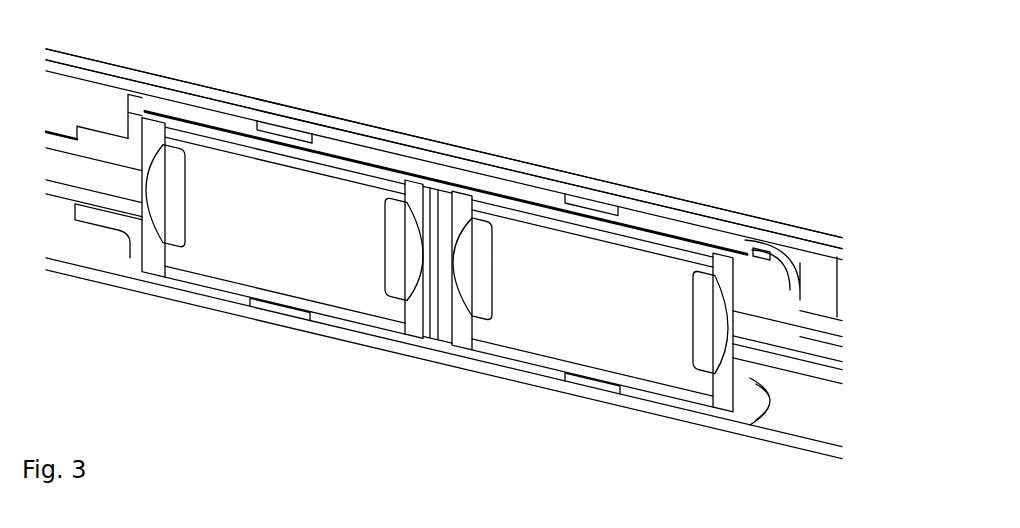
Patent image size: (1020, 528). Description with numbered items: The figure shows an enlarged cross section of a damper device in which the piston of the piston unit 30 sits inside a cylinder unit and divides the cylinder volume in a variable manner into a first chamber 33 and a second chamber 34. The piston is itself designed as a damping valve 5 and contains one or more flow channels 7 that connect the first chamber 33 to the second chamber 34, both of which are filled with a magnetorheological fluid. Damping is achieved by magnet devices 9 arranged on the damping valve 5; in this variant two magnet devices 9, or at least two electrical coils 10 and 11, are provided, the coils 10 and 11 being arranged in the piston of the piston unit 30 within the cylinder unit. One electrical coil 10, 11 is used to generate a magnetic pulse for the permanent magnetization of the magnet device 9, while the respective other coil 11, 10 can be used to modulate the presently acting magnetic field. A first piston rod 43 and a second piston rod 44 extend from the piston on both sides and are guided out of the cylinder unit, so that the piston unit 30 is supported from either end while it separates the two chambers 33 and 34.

The piston unit 30 is at (400, 117).
The damping valve 5 is at (483, 156).
The flow channels 7 is at (230, 137).
The first piston rod 43 is at (55, 142).
The first chamber 33 is at (107, 108).
The magnet device 9 is at (570, 328).
The electrical coil 10 is at (398, 275).
The electrical coil 11 is at (708, 353).
The second chamber 34 is at (807, 272).
The second piston rod 44 is at (837, 300).